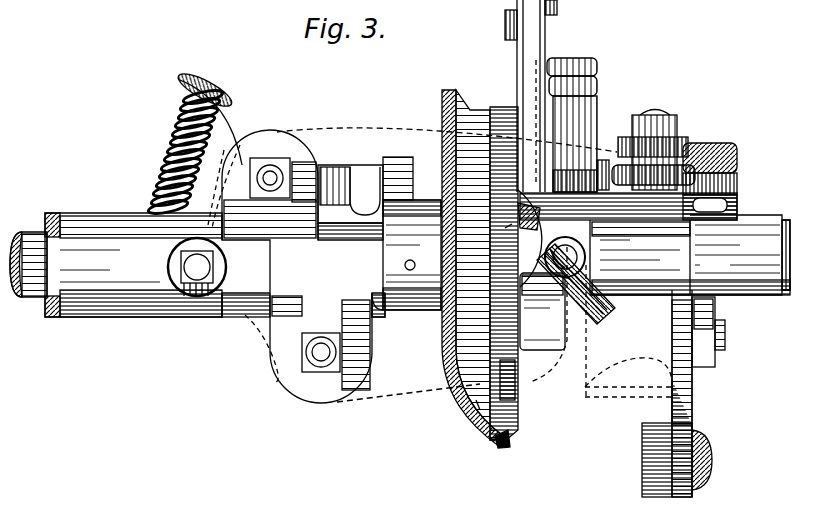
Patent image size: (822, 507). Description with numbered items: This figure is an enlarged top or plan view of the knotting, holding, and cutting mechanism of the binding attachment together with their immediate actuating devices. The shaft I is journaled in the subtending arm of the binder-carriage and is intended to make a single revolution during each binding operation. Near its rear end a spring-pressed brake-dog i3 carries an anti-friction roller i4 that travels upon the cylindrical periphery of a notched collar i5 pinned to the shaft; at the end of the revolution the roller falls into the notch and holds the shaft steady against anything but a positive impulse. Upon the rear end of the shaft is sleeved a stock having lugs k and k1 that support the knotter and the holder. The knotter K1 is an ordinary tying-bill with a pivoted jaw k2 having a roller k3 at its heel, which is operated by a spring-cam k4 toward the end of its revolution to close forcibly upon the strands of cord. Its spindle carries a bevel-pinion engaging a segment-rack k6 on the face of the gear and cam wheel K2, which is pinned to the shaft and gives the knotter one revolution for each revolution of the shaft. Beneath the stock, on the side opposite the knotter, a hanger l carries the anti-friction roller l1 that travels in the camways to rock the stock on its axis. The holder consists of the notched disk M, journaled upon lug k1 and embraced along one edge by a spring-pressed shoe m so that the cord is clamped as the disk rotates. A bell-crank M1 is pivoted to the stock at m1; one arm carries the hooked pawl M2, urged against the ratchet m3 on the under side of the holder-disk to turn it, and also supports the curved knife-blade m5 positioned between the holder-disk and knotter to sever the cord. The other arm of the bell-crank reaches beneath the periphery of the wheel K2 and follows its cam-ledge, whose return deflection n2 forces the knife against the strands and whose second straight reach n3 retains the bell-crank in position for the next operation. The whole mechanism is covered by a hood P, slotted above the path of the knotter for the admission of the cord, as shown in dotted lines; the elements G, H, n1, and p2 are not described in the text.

The shaft G is at (215, 265).
The shaft I is at (38, 242).
The brake-dog i3 is at (240, 126).
The anti-friction roller i4 is at (390, 157).
The bearing block n1 is at (412, 242).
The notched collar i5 is at (390, 309).
The hood P is at (362, 348).
The gear and cam wheel K2 is at (492, 269).
The return deflection n2 is at (476, 407).
The second straight reach n3 is at (513, 434).
The pivoted jaw k2 is at (503, 235).
The spring-cam k4 is at (532, 238).
The roller k3 is at (560, 245).
The knotter K1 is at (598, 318).
The lug k is at (553, 322).
The segment-rack k6 is at (515, 392).
The curved knife-blade m5 is at (538, 107).
The pivot m1 is at (572, 125).
The spring-pressed shoe m is at (601, 165).
The housing body H is at (655, 244).
The lug k1 is at (640, 246).
The ratchet m3 is at (682, 146).
The hooked pawl M2 is at (737, 155).
The notched disk M is at (737, 180).
The bell-crank M1 is at (737, 202).
The hanger l is at (693, 406).
The anti-friction roller l1 is at (662, 460).
The plate p2 is at (544, 499).